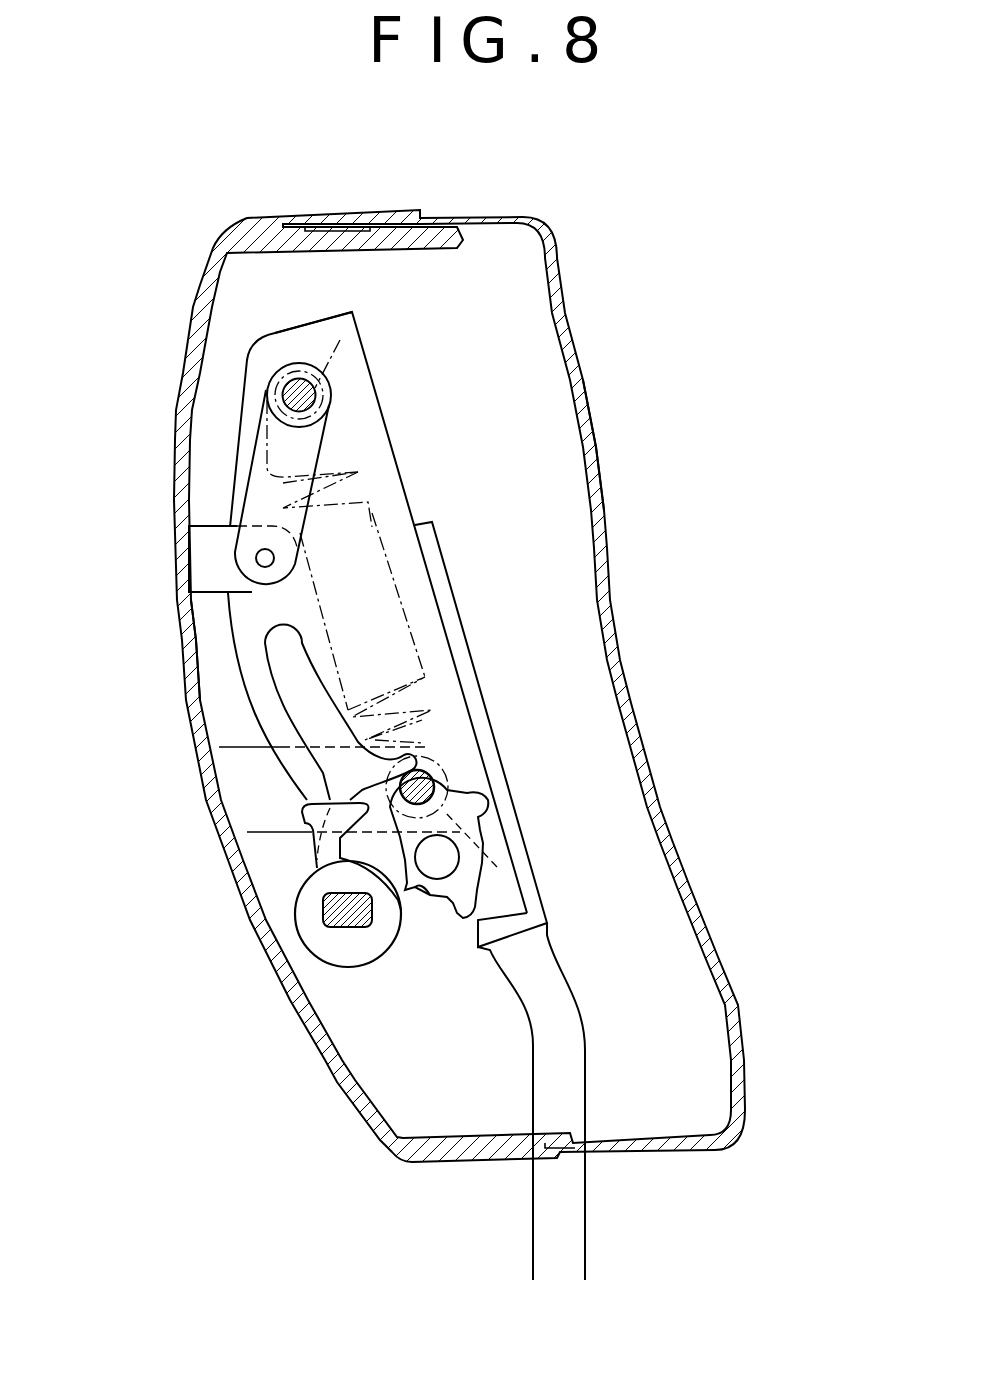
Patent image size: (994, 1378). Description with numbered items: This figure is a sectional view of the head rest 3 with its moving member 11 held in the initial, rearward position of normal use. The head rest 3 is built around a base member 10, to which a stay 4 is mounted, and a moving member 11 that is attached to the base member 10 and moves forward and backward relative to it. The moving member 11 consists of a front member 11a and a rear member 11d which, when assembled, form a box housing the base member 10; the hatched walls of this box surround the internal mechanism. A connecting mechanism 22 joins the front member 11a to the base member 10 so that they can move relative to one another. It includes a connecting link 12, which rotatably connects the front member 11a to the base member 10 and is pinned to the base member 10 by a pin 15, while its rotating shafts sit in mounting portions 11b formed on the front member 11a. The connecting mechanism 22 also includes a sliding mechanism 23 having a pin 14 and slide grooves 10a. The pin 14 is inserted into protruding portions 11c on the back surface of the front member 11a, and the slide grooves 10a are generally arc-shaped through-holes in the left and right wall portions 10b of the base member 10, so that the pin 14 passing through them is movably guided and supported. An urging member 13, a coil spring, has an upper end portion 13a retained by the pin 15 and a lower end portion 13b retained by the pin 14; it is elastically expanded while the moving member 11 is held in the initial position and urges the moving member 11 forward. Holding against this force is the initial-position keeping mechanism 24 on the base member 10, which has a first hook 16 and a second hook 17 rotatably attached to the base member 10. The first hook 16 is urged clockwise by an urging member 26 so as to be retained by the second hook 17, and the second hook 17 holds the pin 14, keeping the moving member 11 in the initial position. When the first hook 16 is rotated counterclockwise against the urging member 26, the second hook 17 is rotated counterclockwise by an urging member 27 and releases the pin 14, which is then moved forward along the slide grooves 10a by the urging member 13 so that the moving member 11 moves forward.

The head rest 3 is at (172, 252).
The stay 4 is at (588, 1228).
The base member 10 is at (384, 391).
The slide groove 10a is at (278, 663).
The wall portion 10b is at (352, 375).
The moving member 11 is at (181, 356).
The front member 11a is at (190, 645).
The mounting portion 11b is at (208, 556).
The protruding portion 11c is at (245, 795).
The rear member 11d is at (605, 433).
The connecting link 12 is at (256, 441).
The urging member 13 is at (363, 495).
The upper end portion 13a is at (327, 395).
The lower end portion 13b is at (520, 882).
The pin 14 is at (460, 802).
The pin 15 is at (299, 378).
The first hook 16 is at (372, 962).
The second hook 17 is at (438, 895).
The connecting mechanism 22 is at (282, 487).
The sliding mechanism 23 is at (417, 787).
The initial-position keeping mechanism 24 is at (443, 990).
The urging member 26 is at (318, 906).
The urging member 27 is at (423, 893).